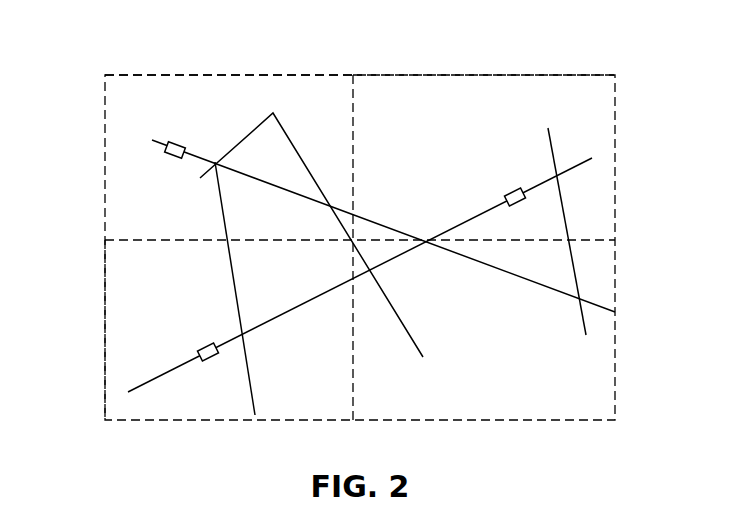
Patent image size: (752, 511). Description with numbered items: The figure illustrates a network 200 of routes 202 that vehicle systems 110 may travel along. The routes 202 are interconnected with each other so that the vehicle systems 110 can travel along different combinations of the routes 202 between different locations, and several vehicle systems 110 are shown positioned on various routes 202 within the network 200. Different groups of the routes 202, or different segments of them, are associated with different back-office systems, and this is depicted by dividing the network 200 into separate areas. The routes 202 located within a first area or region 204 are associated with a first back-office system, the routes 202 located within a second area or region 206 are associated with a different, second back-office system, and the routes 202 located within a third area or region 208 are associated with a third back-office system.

The vehicle system 110 is at (175, 142).
The network 200 is at (625, 75).
The routes 202 is at (308, 302).
The first area or region 204 is at (353, 65).
The second area or region 206 is at (353, 65).
The third area or region 208 is at (97, 240).